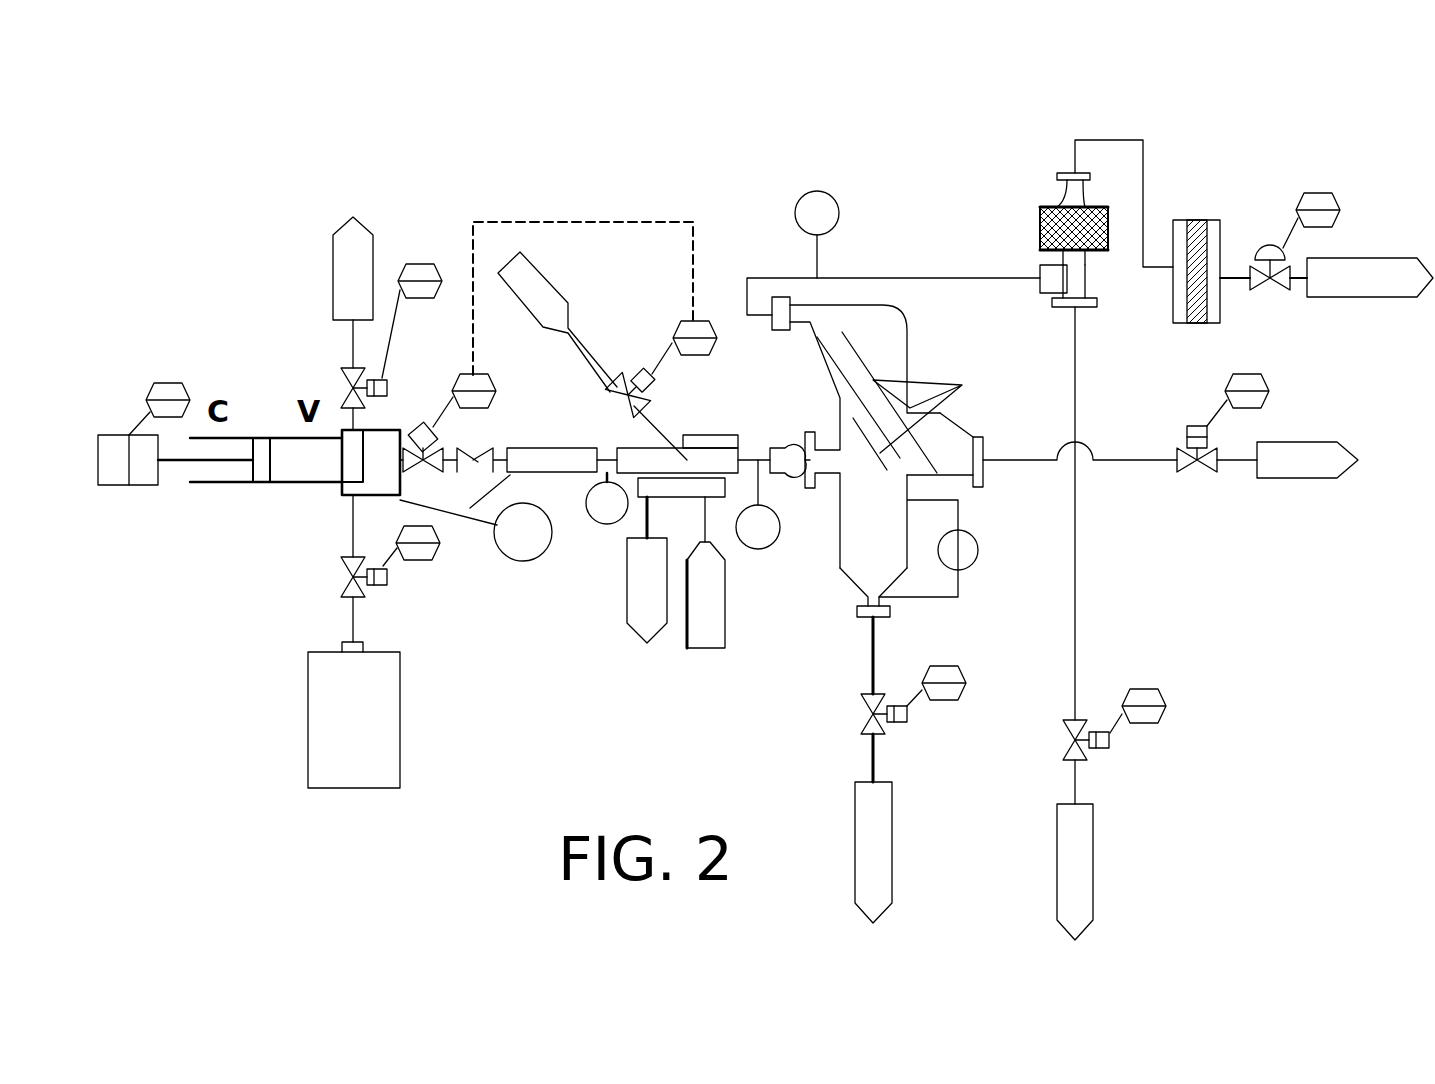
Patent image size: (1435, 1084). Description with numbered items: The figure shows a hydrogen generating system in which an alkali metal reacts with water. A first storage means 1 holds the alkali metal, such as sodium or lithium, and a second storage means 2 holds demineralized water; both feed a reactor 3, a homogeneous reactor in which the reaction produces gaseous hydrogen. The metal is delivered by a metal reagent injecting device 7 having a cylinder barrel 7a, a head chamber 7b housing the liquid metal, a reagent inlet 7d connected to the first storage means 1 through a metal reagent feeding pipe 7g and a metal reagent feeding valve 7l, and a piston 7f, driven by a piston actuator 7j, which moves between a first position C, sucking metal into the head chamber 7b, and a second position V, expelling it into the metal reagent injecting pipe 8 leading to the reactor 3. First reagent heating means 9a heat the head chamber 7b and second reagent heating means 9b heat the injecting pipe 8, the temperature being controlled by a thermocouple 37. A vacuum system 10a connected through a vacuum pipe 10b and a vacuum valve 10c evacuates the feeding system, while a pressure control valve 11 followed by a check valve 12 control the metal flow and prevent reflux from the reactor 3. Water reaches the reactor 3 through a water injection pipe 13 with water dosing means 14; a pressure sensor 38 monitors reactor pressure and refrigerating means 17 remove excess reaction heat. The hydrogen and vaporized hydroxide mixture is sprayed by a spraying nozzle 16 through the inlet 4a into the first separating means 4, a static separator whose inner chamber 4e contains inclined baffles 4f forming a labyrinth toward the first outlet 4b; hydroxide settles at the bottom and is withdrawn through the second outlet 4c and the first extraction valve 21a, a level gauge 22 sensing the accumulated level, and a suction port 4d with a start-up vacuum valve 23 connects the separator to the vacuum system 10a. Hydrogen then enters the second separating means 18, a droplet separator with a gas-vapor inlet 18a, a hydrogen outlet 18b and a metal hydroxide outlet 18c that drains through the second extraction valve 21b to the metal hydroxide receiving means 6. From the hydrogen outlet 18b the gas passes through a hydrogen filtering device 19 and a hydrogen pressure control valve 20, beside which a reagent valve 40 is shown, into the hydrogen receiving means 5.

The first storage means 1 is at (354, 715).
The second storage means 2 is at (533, 263).
The reactor 3 is at (630, 448).
The first separating means 4 is at (855, 303).
The inlet 4a is at (825, 447).
The first outlet 4b is at (790, 313).
The second outlet 4c is at (890, 612).
The suction port 4d is at (985, 484).
The inner chamber 4e is at (893, 332).
The baffles 4f is at (938, 411).
The hydrogen receiving means 5 is at (1375, 257).
The metal hydroxide receiving means 6 is at (892, 860).
The metal reagent injecting device 7 is at (252, 432).
The cylinder barrel 7a is at (310, 480).
The head chamber 7b is at (295, 472).
The reagent inlet 7d is at (350, 517).
The piston 7f is at (250, 484).
The metal reagent feeding pipe 7g is at (357, 620).
The piston actuator 7j is at (163, 385).
The metal reagent feeding valve 7l is at (345, 583).
The metal reagent injecting pipe 8 is at (550, 457).
The first reagent heating means 9a is at (377, 440).
The second reagent heating means 9b is at (575, 472).
The vacuum system 10a is at (367, 237).
The vacuum pipe 10b is at (350, 338).
The vacuum valve 10c is at (348, 388).
The pressure control valve 11 is at (422, 443).
The check valve 12 is at (475, 470).
The water injection pipe 13 is at (580, 340).
The water dosing means 14 is at (631, 385).
The spraying nozzle 16 is at (783, 473).
The refrigerating means 17 is at (710, 437).
The second separating means 18 is at (1053, 203).
The gas-vapor inlet 18a is at (1040, 290).
The hydrogen outlet 18b is at (1087, 182).
The metal hydroxide outlet 18c is at (1097, 310).
The hydrogen filtering device 19 is at (1200, 220).
The hydrogen pressure control valve 20 is at (1278, 287).
The first extraction valve 21a is at (906, 715).
The second extraction valve 21b is at (1110, 742).
The level gauge 22 is at (978, 556).
The start-up vacuum valve 23 is at (1193, 470).
The thermocouple 37 is at (605, 524).
The pressure sensor 38 is at (758, 550).
The reagent valve 40 is at (1273, 240).